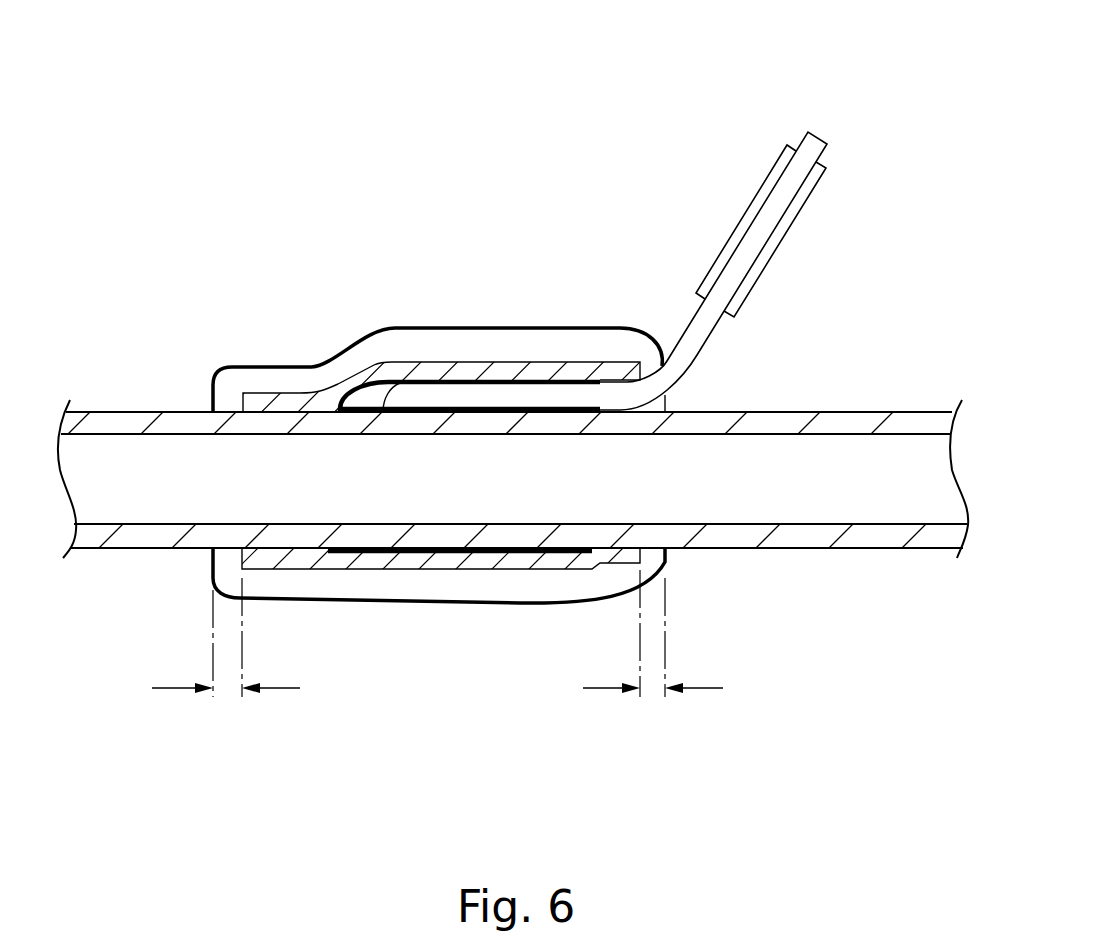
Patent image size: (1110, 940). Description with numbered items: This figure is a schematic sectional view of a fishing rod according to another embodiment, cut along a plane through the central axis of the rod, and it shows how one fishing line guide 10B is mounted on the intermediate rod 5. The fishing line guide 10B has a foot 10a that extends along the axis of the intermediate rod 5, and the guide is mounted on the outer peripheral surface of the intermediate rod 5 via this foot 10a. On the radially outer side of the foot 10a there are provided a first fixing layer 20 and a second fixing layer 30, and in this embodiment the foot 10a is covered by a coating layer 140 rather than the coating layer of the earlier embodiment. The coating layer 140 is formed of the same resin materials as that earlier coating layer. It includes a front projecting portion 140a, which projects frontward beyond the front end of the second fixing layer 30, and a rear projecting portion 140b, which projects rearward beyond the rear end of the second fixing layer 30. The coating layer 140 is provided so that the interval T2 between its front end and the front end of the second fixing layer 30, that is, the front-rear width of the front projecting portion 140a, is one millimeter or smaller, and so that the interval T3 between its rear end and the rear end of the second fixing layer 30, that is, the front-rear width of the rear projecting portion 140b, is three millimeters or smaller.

The intermediate rod 5 is at (865, 412).
The fishing line guide 10B is at (848, 108).
The foot 10a is at (517, 393).
The first fixing layer 20 is at (443, 375).
The second fixing layer 30 is at (402, 370).
The coating layer 140 is at (445, 595).
The front projecting portion 140a is at (650, 366).
The rear projecting portion 140b is at (222, 397).
The interval T2 is at (653, 690).
The interval T3 is at (227, 692).